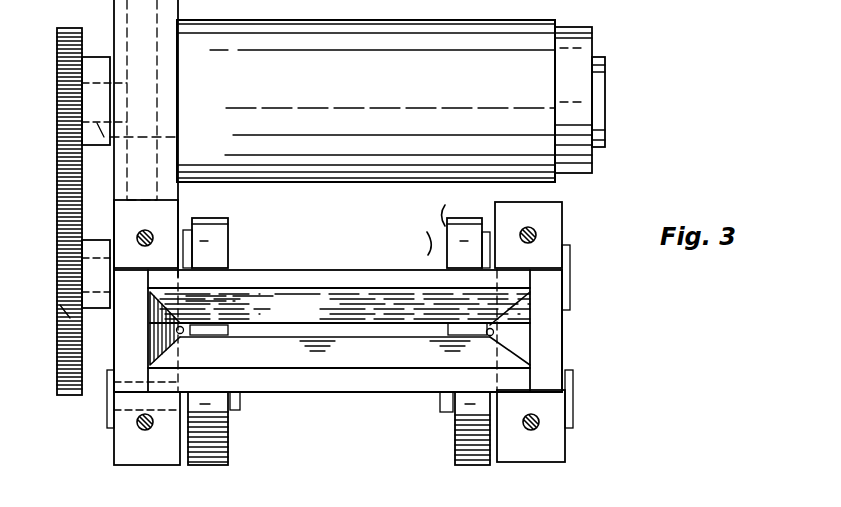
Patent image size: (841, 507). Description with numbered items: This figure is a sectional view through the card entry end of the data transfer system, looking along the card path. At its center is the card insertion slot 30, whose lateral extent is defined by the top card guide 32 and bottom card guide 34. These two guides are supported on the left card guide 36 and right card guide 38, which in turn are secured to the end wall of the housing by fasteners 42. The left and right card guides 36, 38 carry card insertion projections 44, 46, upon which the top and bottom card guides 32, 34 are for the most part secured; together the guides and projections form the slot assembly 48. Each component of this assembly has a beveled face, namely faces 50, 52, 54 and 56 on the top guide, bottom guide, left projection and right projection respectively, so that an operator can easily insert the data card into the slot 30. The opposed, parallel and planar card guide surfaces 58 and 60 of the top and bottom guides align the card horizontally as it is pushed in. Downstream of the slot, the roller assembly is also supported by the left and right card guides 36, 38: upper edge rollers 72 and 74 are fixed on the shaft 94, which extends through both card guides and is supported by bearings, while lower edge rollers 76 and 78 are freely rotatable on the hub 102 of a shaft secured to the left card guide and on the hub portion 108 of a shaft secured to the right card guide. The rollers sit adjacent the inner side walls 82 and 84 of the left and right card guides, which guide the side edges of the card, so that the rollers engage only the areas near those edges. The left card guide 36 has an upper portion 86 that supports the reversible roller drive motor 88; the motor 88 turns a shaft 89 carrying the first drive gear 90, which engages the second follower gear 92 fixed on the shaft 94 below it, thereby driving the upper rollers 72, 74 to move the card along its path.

The card insertion slot 30 is at (425, 323).
The top card guide 32 is at (346, 277).
The bottom card guide 34 is at (362, 380).
The left card guide 36 is at (120, 442).
The right card guide 38 is at (555, 447).
The fasteners 42 is at (152, 232).
The card insertion projection 44 is at (122, 353).
The card insertion projection 46 is at (548, 358).
The slot assembly 48 is at (567, 316).
The beveled face 50 is at (376, 300).
The beveled face 52 is at (318, 380).
The beveled face 54 is at (157, 327).
The beveled face 56 is at (543, 338).
The card guide surface 58 is at (310, 328).
The card guide surface 60 is at (340, 335).
The upper edge roller 72 is at (226, 224).
The upper edge roller 74 is at (448, 225).
The lower edge roller 76 is at (229, 452).
The lower edge roller 78 is at (453, 450).
The inner side wall 82 is at (185, 340).
The inner side wall 84 is at (491, 338).
The upper portion 86 is at (167, 94).
The reversible roller drive motor 88 is at (455, 85).
The shaft 89 is at (178, 138).
The first drive gear 90 is at (57, 68).
The second follower gear 92 is at (57, 222).
The shaft 94 is at (57, 313).
The hub 102 is at (240, 406).
The hub portion 108 is at (440, 408).